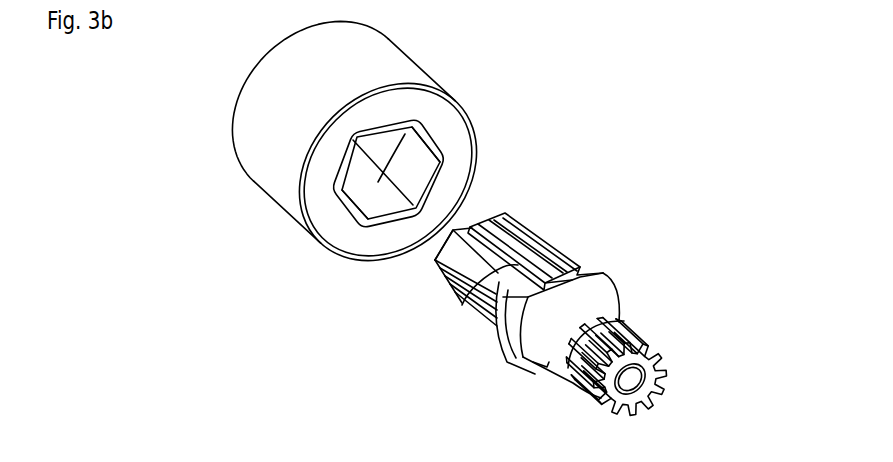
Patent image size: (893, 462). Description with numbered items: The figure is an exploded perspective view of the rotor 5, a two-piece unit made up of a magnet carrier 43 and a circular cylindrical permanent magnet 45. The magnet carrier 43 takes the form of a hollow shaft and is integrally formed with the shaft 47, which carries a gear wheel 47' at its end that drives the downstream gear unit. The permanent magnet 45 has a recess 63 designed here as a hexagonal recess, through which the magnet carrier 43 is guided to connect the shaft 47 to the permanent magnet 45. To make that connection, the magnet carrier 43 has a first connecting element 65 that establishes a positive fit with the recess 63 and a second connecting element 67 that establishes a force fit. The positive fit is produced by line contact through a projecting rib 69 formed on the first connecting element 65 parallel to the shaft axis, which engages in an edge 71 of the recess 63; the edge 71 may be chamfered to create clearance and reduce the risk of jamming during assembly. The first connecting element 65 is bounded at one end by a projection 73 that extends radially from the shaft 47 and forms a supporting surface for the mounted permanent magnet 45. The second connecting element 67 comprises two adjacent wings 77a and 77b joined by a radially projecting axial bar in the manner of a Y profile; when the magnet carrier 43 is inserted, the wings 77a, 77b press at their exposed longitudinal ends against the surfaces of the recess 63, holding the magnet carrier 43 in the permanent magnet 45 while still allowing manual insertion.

The rotor 5 is at (297, 267).
The magnet carrier 43 is at (547, 231).
The permanent magnet 45 is at (368, 68).
The shaft 47 is at (554, 402).
The gear wheel 47' is at (662, 329).
The recess 63 is at (402, 163).
The first connecting element 65 is at (462, 288).
The second connecting element 67 is at (493, 222).
The projecting rib 69 is at (435, 260).
The edge 71 is at (440, 143).
The projection 73 is at (518, 347).
The wing 77a is at (560, 270).
The wing 77b is at (462, 305).